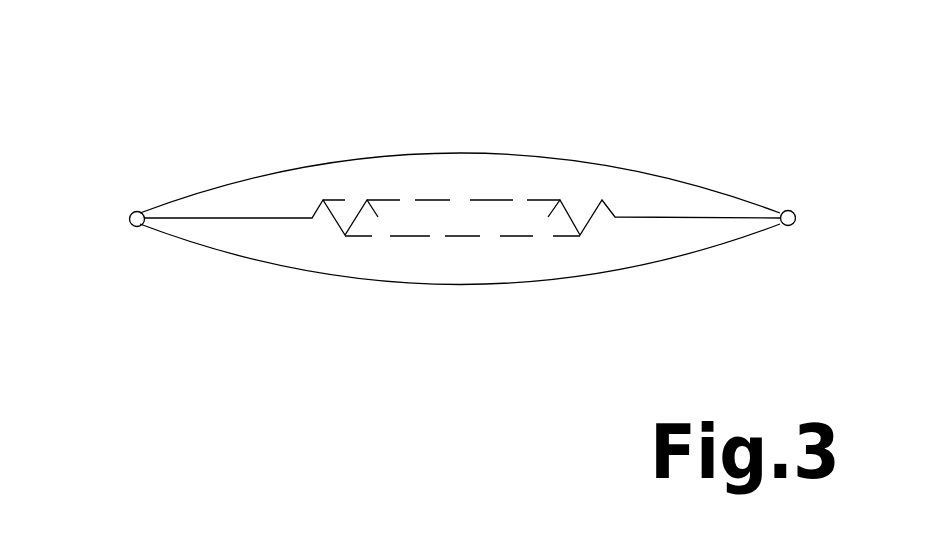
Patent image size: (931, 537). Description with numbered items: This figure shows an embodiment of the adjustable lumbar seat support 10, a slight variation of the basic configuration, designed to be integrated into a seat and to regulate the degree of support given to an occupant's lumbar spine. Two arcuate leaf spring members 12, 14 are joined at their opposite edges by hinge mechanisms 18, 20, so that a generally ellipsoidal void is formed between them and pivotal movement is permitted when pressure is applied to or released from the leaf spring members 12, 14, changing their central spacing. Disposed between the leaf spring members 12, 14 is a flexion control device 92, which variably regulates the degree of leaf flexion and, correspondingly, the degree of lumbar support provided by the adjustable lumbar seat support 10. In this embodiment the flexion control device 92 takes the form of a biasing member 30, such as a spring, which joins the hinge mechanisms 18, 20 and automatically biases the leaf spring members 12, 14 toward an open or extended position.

The adjustable lumbar seat support 10 is at (427, 111).
The leaf spring member 12 is at (617, 157).
The leaf spring member 14 is at (235, 264).
The hinge mechanism 18 is at (137, 212).
The hinge mechanism 20 is at (788, 211).
The biasing member 30 is at (588, 222).
The flexion control device 92 is at (452, 250).